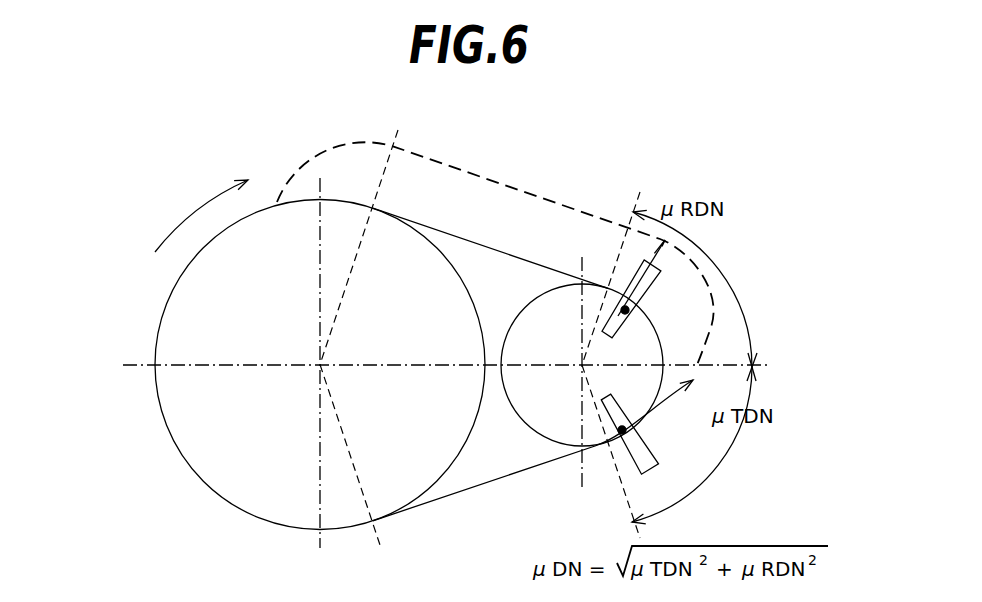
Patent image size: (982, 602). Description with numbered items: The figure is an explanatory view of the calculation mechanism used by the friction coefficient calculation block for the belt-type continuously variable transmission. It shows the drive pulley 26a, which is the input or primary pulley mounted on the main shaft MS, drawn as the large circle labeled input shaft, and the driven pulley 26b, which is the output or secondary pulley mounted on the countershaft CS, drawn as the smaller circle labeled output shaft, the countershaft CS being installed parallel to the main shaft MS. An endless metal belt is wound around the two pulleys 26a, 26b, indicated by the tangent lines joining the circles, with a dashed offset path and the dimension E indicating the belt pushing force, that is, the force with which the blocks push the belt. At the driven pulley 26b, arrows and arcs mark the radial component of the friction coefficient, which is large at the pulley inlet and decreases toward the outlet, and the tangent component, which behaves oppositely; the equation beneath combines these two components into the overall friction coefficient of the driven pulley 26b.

The drive pulley 26a is at (166, 305).
The driven pulley 26b is at (657, 334).
The belt pushing force E is at (466, 172).
The main shaft MS is at (274, 363).
The countershaft CS is at (536, 372).